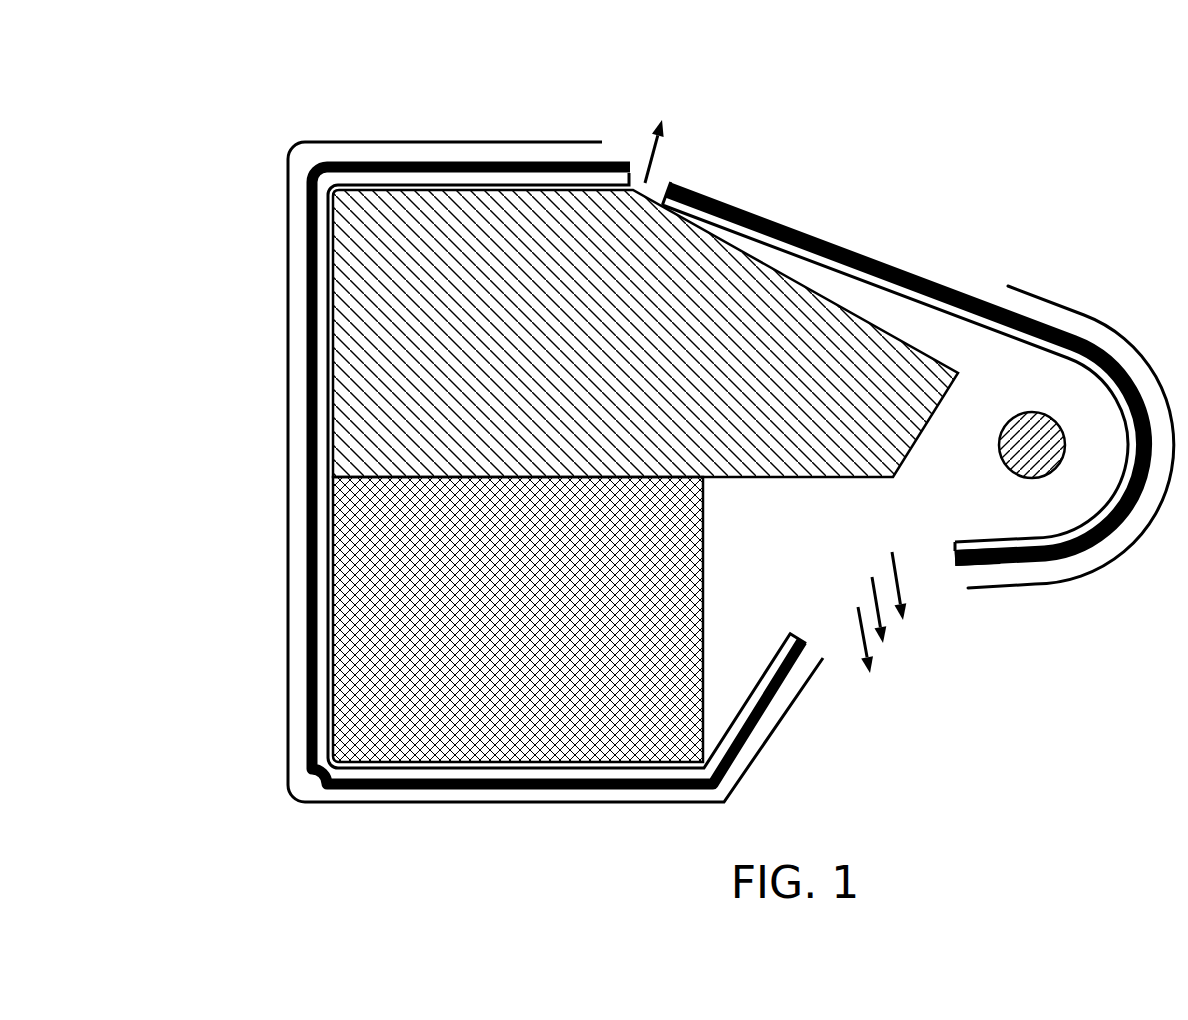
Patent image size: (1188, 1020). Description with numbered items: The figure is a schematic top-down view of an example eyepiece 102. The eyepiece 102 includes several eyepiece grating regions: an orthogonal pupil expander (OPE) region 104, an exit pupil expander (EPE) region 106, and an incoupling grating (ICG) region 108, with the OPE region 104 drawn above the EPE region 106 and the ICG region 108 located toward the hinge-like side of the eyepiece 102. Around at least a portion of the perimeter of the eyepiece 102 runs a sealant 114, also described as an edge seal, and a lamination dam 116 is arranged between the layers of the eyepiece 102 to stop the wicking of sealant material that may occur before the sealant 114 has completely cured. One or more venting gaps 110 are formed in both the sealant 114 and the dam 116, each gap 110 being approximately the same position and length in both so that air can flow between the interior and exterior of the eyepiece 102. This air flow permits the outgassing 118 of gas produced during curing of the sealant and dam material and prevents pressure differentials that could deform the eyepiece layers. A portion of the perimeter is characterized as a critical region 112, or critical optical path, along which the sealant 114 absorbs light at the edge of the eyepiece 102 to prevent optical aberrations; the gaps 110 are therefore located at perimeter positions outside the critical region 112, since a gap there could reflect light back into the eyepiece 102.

The eyepiece 102 is at (196, 134).
The orthogonal pupil expander (OPE) region 104 is at (567, 325).
The exit pupil expander (EPE) region 106 is at (534, 628).
The incoupling grating (ICG) region 108 is at (1033, 412).
The venting gap 110 is at (670, 163).
The critical region 112 is at (287, 372).
The sealant 114 is at (818, 232).
The lamination dam 116 is at (963, 548).
The outgassing 118 is at (638, 136).